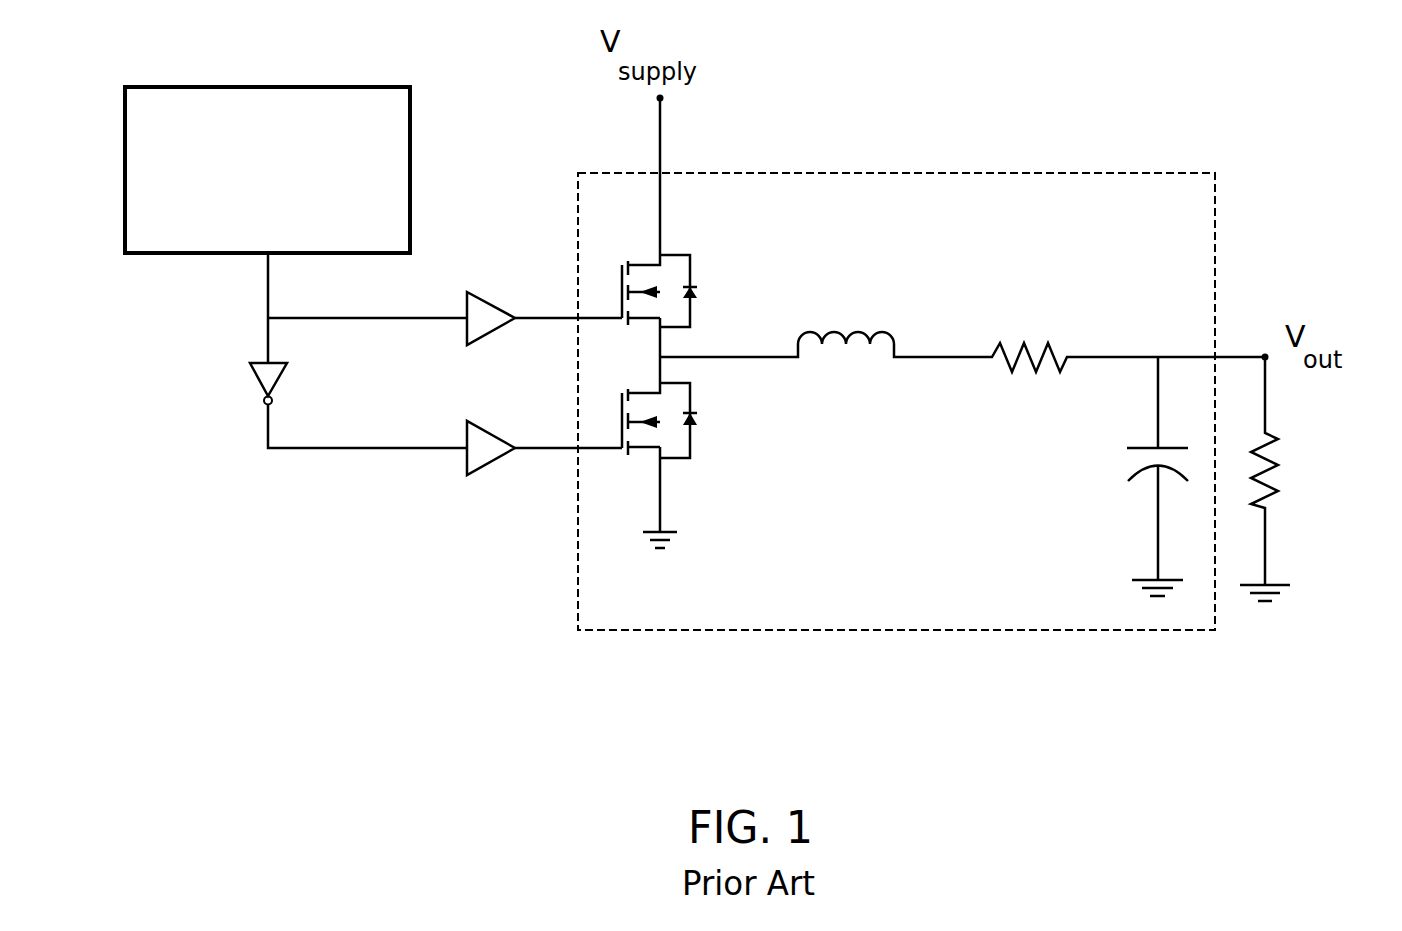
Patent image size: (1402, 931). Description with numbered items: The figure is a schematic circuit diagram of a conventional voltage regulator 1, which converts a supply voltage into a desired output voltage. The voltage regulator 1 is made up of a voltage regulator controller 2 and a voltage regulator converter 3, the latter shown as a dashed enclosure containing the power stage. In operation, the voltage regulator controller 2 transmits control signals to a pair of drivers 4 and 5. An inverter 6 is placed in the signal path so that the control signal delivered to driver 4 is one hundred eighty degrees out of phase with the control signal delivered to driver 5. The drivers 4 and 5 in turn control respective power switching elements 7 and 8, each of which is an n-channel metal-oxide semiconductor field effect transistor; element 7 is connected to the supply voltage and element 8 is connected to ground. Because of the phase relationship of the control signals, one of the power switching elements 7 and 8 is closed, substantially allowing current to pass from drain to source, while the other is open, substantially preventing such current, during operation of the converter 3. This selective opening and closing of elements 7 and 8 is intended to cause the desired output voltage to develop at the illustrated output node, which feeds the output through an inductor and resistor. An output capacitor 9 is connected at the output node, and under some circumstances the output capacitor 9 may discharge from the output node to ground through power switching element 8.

The voltage regulator 1 is at (816, 52).
The voltage regulator controller 2 is at (267, 84).
The voltage regulator converter 3 is at (897, 173).
The driver 4 is at (490, 301).
The driver 5 is at (490, 430).
The inverter 6 is at (258, 381).
The power switching element 7 is at (643, 257).
The power switching element 8 is at (642, 387).
The output capacitor 9 is at (1121, 462).